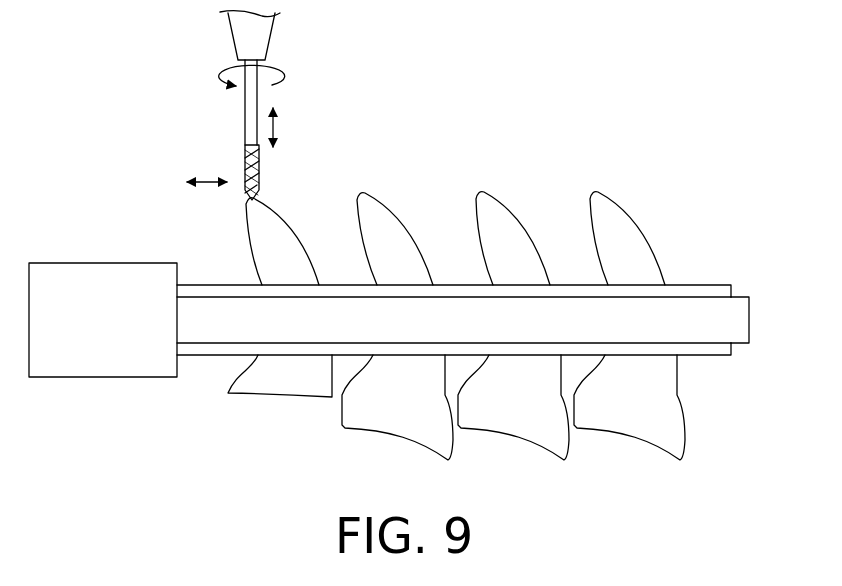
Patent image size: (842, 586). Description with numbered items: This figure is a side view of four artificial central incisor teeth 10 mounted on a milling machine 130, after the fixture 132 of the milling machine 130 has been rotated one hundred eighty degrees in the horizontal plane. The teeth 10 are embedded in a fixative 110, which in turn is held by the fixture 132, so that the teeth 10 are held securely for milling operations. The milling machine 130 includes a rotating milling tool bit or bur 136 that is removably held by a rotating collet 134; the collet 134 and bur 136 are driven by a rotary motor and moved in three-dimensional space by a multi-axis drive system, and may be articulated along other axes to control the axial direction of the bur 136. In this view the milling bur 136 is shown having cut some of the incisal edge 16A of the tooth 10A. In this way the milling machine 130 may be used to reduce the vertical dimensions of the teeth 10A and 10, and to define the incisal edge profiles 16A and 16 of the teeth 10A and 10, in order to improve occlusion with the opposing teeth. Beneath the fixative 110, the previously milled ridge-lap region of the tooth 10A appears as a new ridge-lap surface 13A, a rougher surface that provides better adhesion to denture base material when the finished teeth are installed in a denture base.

The central incisor teeth 10 is at (386, 163).
The tooth 10A is at (214, 385).
The new ridge-lap surface 13A is at (280, 397).
The incisal edge profiles 16 is at (356, 196).
The incisal edge 16A is at (262, 186).
The fixative 110 is at (705, 285).
The milling machine 130 is at (160, 163).
The fixture 132 is at (752, 320).
The rotating collet 134 is at (272, 30).
The milling bur 136 is at (245, 113).